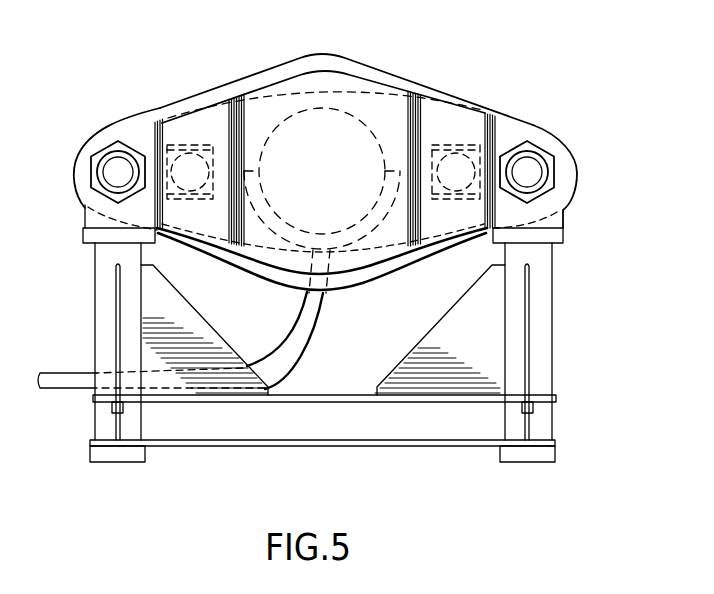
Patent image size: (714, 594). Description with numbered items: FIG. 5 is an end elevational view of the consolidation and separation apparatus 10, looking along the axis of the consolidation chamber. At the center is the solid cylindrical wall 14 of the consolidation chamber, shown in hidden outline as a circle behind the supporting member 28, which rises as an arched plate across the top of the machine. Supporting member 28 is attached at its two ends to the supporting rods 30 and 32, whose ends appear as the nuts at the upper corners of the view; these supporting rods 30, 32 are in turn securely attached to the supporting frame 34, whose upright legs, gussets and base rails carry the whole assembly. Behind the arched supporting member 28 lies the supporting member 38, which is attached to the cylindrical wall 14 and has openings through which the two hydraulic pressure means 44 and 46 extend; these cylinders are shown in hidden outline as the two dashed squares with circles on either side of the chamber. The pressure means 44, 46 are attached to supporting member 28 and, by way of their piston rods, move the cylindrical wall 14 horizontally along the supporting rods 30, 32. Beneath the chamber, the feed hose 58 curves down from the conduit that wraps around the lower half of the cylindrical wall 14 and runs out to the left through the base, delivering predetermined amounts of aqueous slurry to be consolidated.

The apparatus 10 is at (480, 88).
The solid cylindrical wall 14 is at (278, 127).
The supporting member 28 is at (388, 92).
The supporting rod 30 is at (552, 170).
The supporting rod 32 is at (73, 163).
The supporting frame 34 is at (544, 373).
The supporting member 38 is at (538, 130).
The pressure means 44 is at (456, 142).
The pressure means 46 is at (182, 152).
The feed hose 58 is at (312, 299).